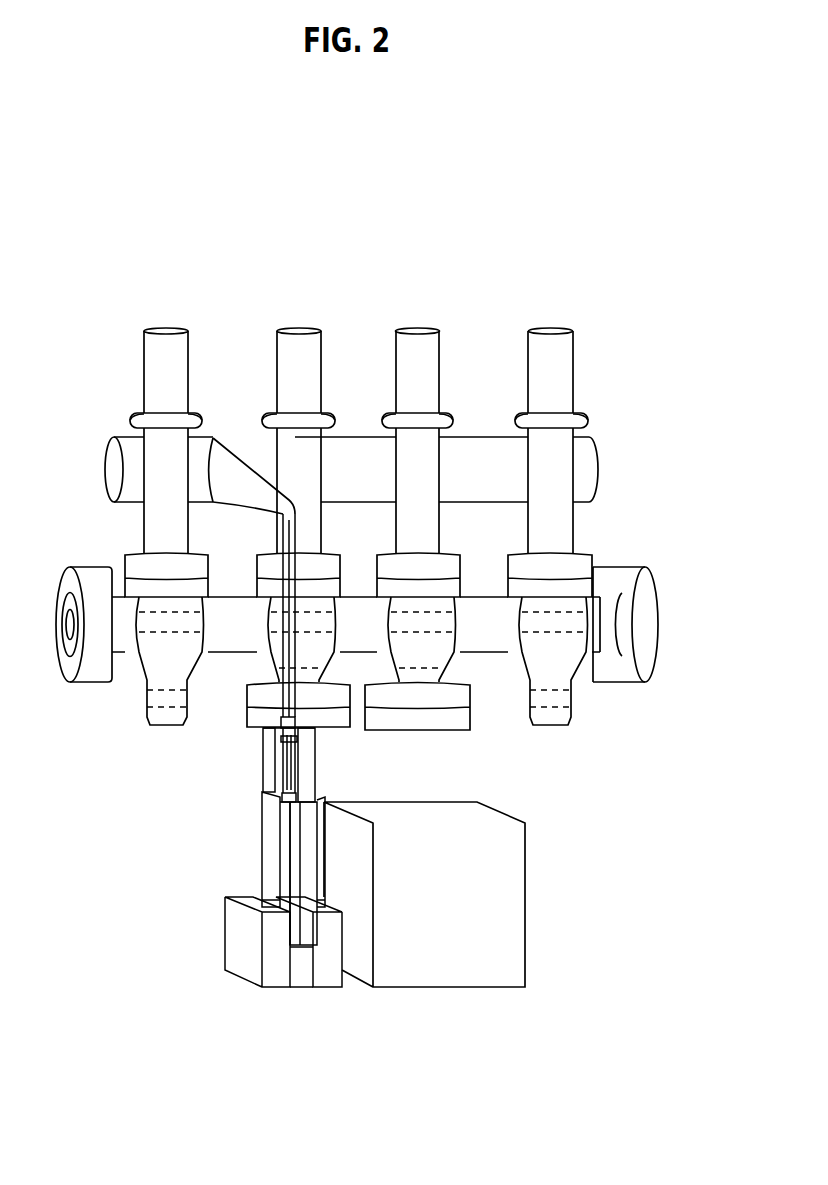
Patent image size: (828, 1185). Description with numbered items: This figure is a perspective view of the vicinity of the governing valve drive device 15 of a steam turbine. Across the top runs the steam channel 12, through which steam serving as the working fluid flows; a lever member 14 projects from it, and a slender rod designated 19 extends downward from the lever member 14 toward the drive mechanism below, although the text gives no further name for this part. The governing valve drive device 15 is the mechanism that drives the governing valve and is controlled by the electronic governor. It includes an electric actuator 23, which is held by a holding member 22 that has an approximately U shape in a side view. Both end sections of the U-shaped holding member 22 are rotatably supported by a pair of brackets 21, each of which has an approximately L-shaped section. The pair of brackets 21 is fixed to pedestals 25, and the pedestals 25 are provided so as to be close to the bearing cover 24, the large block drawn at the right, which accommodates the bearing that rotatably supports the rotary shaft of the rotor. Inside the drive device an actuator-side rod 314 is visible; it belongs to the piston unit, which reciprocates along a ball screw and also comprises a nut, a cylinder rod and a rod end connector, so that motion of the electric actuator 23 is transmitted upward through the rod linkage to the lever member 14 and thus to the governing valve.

The steam channel 12 is at (585, 525).
The lever member 14 is at (248, 458).
The pipe 19 is at (296, 532).
The governing valve drive device 15 is at (249, 857).
The holding member 22 is at (262, 750).
The actuator-side rod 314 is at (284, 775).
The electric actuator 23 is at (308, 832).
The brackets 21 is at (262, 902).
The pedestals 25 is at (225, 928).
The bearing cover 24 is at (526, 886).